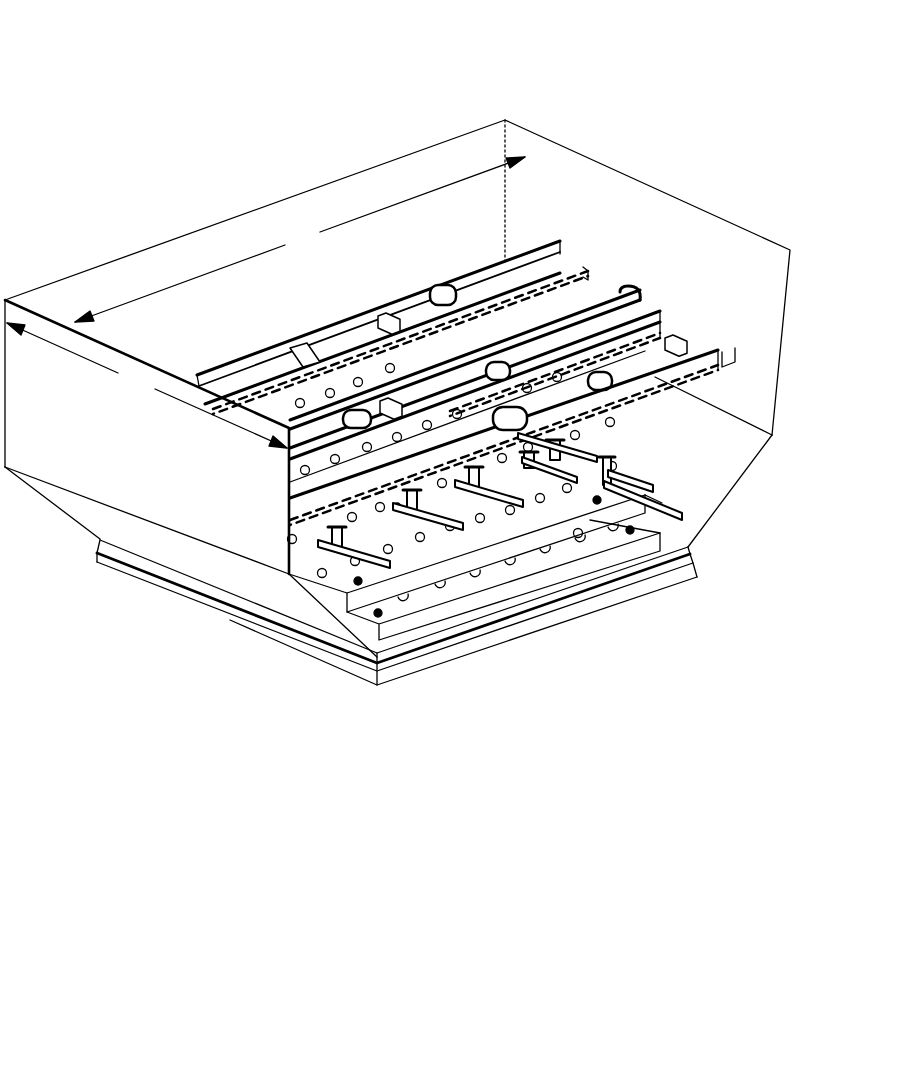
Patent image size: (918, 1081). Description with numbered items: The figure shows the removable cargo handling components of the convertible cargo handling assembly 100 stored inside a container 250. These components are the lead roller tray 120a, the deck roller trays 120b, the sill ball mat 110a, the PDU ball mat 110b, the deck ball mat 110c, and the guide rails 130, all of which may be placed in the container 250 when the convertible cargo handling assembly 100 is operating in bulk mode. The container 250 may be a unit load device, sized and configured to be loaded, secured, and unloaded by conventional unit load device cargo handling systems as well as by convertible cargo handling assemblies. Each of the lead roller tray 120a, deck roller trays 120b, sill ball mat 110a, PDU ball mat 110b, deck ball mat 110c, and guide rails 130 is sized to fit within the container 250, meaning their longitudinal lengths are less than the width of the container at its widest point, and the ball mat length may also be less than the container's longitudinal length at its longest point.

The convertible cargo handling assembly 100 is at (147, 83).
The container 250 is at (600, 148).
The sill ball mat 110a is at (265, 360).
The PDU ball mat 110b is at (318, 566).
The deck ball mat 110c is at (577, 597).
The lead roller tray 120a is at (688, 348).
The deck roller trays 120b is at (432, 312).
The guide rails 130 is at (637, 483).